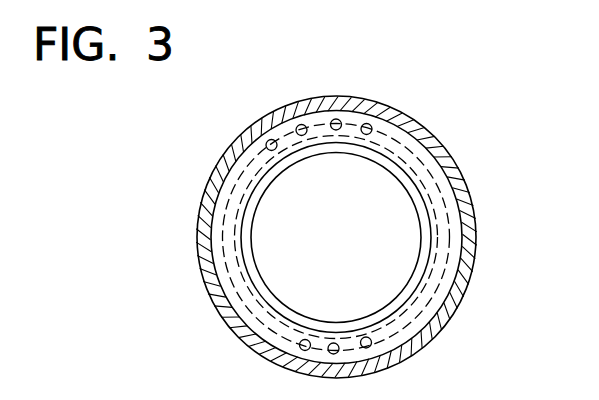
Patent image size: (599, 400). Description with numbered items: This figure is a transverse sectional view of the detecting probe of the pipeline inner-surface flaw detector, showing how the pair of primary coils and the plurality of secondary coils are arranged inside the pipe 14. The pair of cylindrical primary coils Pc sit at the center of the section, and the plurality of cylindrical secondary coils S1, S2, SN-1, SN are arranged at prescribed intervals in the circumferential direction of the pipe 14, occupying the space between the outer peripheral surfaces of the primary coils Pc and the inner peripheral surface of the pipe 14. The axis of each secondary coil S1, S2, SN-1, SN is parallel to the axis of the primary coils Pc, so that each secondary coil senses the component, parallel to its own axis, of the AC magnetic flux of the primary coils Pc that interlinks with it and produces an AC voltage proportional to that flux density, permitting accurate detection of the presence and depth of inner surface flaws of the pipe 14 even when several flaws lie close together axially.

The pipe 14 is at (433, 132).
The primary coils Pc is at (252, 207).
The secondary coil S1 is at (336, 119).
The secondary coil S2 is at (370, 124).
The secondary coil SN is at (300, 124).
The secondary coil SN-1 is at (268, 140).